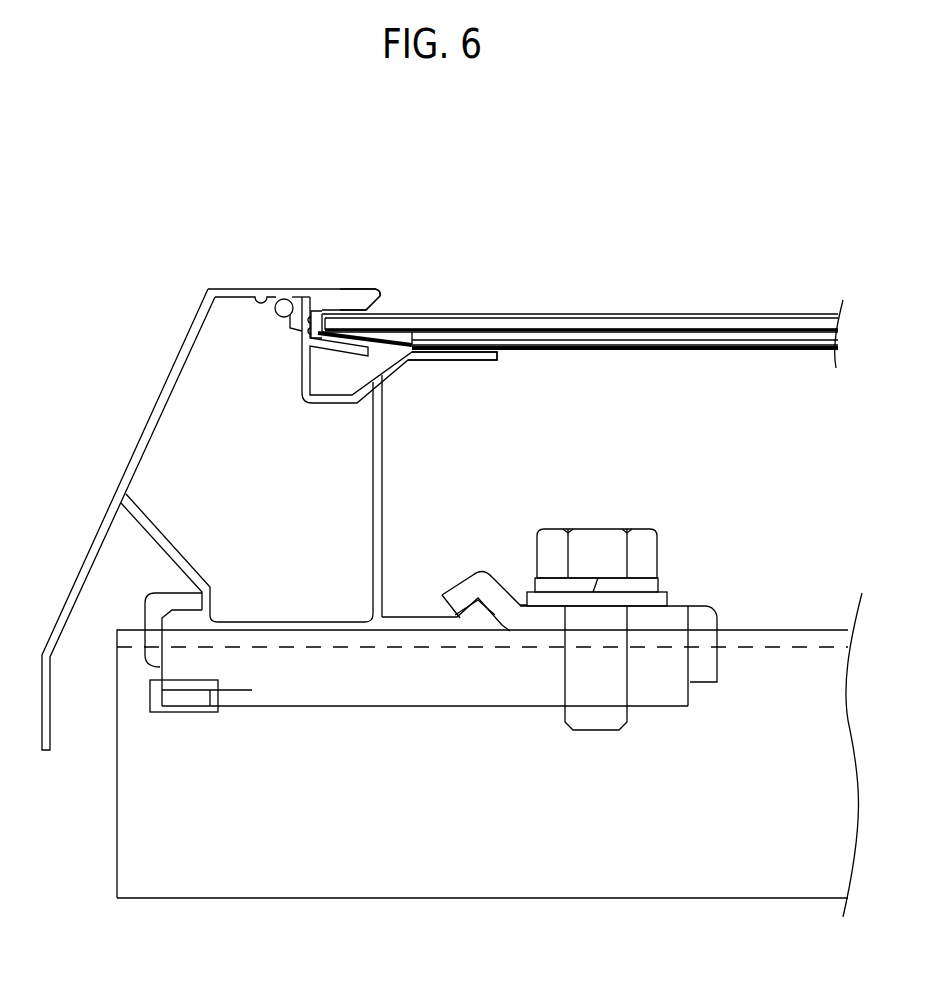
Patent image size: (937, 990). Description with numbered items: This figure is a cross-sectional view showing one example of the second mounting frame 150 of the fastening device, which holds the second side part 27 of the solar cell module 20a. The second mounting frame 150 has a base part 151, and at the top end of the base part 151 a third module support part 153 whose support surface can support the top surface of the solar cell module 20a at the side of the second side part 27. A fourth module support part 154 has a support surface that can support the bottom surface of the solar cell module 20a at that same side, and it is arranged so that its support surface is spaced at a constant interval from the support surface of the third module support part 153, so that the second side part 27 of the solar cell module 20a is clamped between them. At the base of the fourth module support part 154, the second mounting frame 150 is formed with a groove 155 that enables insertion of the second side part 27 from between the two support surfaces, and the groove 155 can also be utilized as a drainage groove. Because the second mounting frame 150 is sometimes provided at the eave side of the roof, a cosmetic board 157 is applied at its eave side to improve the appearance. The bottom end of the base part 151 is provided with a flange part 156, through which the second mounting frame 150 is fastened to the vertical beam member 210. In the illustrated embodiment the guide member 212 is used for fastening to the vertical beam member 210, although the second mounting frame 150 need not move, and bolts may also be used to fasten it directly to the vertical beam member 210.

The second mounting frame 150 is at (172, 252).
The base part 151 is at (373, 487).
The third module support part 153 is at (360, 290).
The fourth module support part 154 is at (468, 353).
The groove 155 is at (300, 388).
The flange part 156 is at (410, 622).
The cosmetic board 157 is at (140, 447).
The second side part 27 is at (335, 320).
The solar cell module 20a is at (750, 297).
The vertical beam member 210 is at (790, 640).
The guide member 212 is at (675, 615).